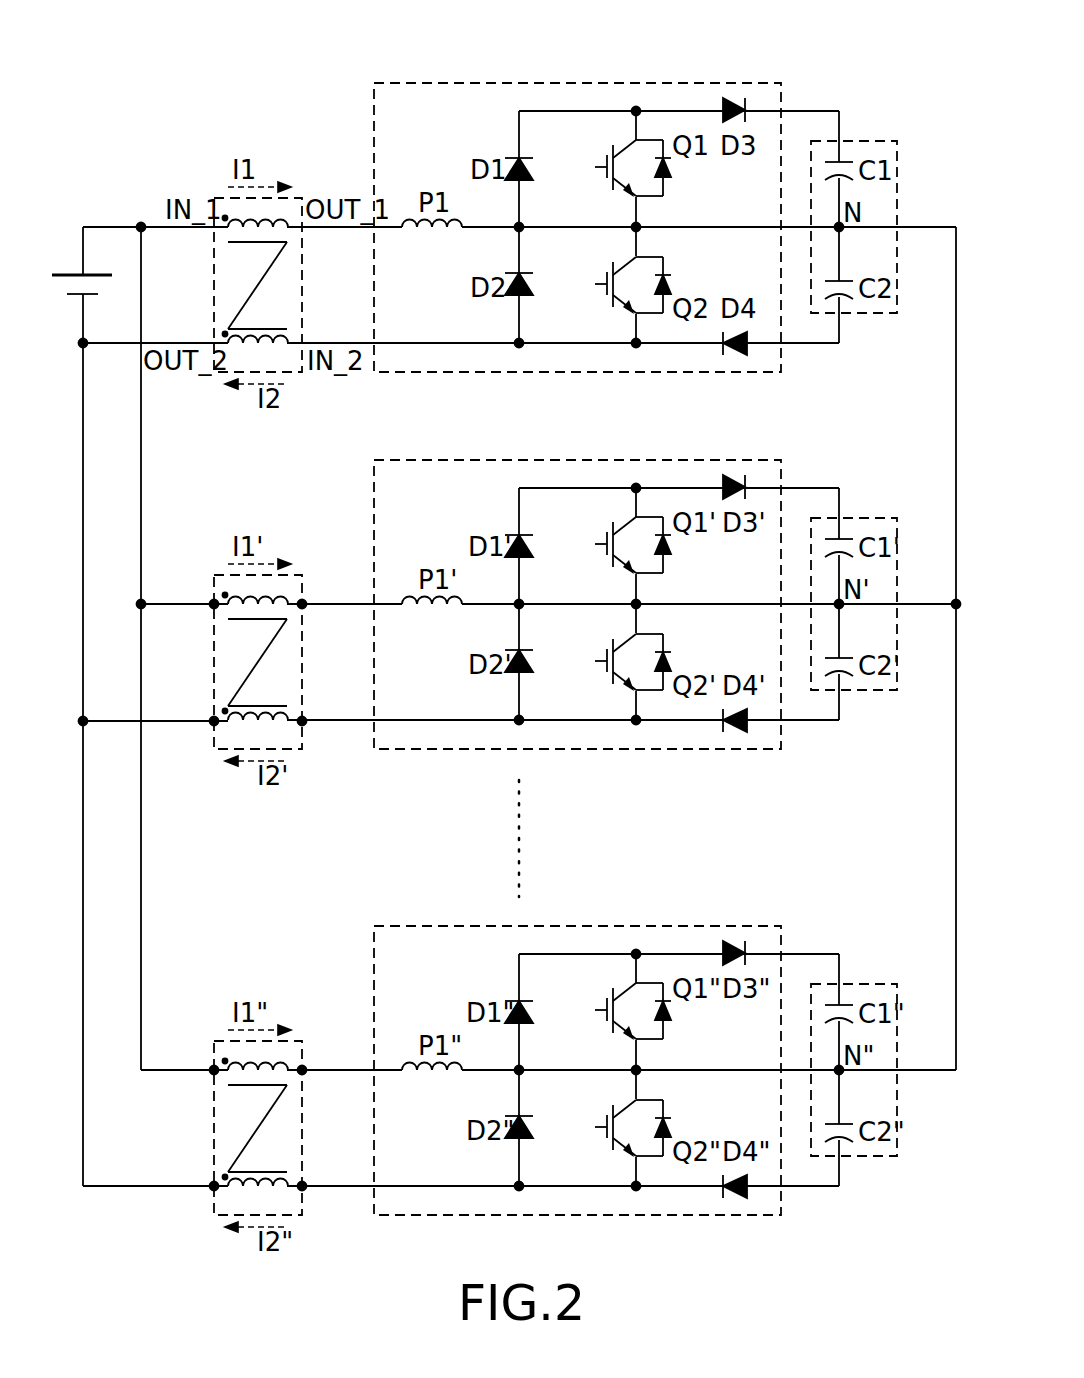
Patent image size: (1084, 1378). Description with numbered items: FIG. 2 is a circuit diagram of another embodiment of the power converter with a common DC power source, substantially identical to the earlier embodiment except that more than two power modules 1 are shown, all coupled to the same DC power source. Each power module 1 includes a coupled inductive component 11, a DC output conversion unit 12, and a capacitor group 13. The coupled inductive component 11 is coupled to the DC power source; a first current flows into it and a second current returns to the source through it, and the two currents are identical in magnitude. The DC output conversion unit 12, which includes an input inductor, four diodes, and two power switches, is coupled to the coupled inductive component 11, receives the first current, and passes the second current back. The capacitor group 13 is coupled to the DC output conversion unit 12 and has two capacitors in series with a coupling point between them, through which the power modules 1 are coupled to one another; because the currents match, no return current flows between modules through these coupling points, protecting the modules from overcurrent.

The power module 1 is at (322, 92).
The coupled inductive component 11 is at (224, 198).
The DC output conversion unit 12 is at (578, 83).
The capacitor group 13 is at (857, 141).